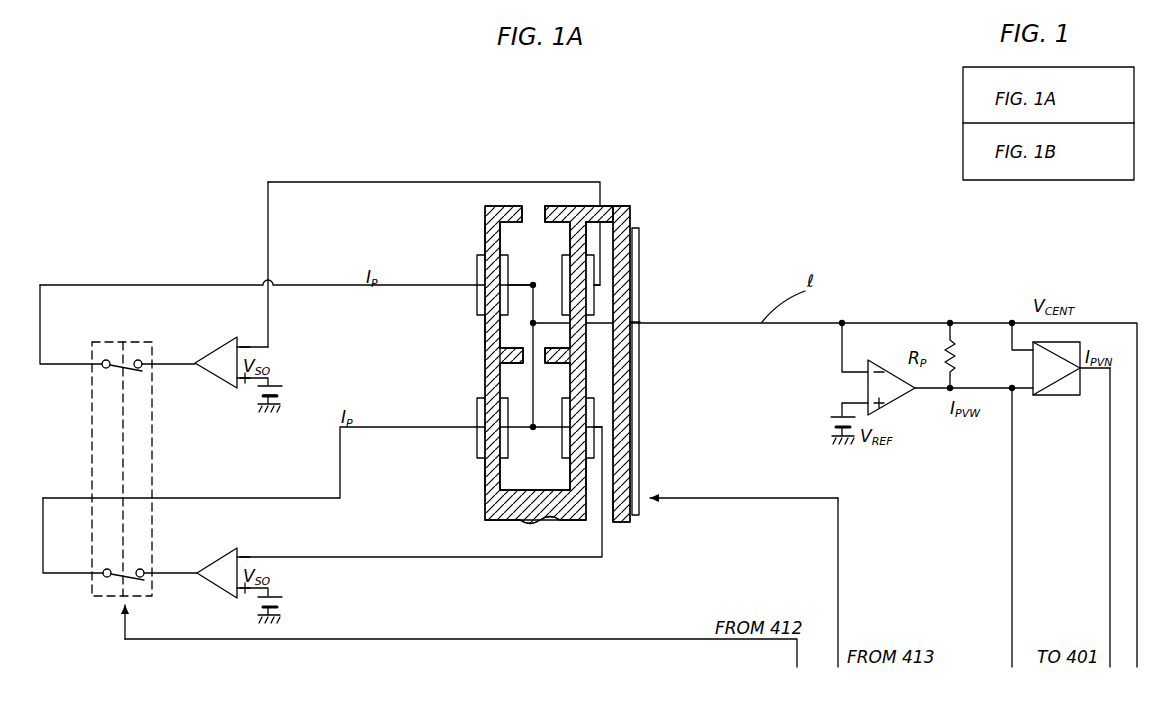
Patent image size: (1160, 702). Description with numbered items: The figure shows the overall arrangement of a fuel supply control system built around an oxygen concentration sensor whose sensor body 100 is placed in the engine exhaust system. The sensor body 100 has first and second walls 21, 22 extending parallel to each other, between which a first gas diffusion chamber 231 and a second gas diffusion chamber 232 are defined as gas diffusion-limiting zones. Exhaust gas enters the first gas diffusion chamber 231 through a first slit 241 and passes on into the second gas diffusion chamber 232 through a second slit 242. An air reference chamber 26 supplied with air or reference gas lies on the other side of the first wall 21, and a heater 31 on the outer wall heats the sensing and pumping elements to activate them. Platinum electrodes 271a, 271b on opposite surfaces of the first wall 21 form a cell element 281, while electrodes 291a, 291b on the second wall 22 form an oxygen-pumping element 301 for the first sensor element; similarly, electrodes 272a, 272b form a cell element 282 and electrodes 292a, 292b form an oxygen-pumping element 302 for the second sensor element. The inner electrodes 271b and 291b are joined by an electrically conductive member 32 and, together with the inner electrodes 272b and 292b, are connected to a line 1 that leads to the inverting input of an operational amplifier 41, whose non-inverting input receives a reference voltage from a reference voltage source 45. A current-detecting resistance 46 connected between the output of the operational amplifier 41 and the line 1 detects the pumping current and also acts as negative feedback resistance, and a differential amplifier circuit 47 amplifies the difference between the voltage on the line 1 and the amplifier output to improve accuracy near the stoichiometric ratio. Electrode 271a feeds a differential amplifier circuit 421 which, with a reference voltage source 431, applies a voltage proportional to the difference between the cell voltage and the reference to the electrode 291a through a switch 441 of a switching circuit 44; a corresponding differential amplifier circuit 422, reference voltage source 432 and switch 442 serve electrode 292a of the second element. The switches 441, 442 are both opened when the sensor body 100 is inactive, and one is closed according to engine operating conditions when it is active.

The line 1 is at (759, 239).
The first wall 21 is at (634, 231).
The second wall 22 is at (482, 262).
The first gas diffusion chamber 231 is at (552, 214).
The second gas diffusion chamber 232 is at (505, 483).
The first slit 241 is at (532, 218).
The second slit 242 is at (541, 362).
The air reference chamber 26 is at (606, 495).
The electrode 271a is at (578, 244).
The electrode 271b is at (563, 272).
The electrode 272a is at (596, 420).
The electrode 272b is at (570, 443).
The cell element 281 is at (600, 295).
The cell element 282 is at (600, 398).
The electrode 291a is at (479, 316).
The electrode 291b is at (492, 265).
The electrode 292a is at (482, 452).
The electrode 292b is at (507, 404).
The oxygen-pumping element 301 is at (472, 278).
The oxygen-pumping element 302 is at (472, 424).
The heater 31 is at (642, 340).
The electrically conductive member 32 is at (508, 292).
The operational amplifier 41 is at (871, 363).
The differential amplifier circuit 421 is at (206, 372).
The differential amplifier circuit 422 is at (210, 587).
The reference voltage source 431 is at (256, 391).
The reference voltage source 432 is at (258, 602).
The switching circuit 44 is at (92, 421).
The switch 441 is at (118, 360).
The switch 442 is at (128, 575).
The reference voltage source 45 is at (836, 430).
The current-detecting resistance 46 is at (952, 358).
The differential amplifier circuit 47 is at (1063, 400).
The sensor body 100 is at (624, 200).